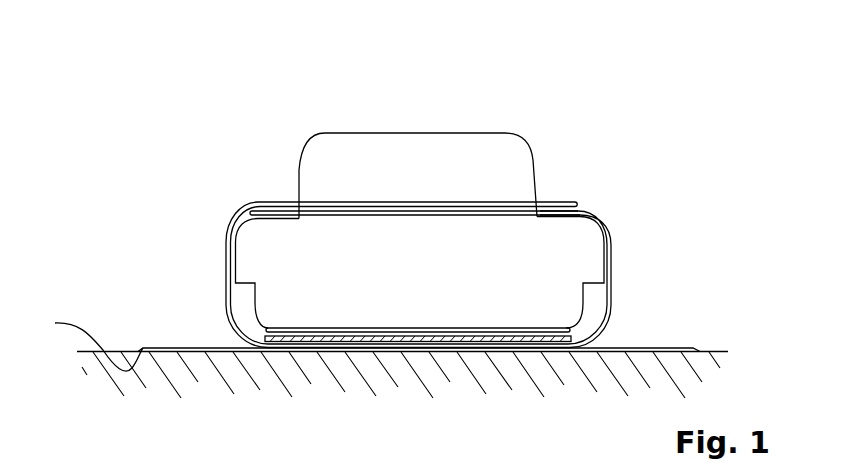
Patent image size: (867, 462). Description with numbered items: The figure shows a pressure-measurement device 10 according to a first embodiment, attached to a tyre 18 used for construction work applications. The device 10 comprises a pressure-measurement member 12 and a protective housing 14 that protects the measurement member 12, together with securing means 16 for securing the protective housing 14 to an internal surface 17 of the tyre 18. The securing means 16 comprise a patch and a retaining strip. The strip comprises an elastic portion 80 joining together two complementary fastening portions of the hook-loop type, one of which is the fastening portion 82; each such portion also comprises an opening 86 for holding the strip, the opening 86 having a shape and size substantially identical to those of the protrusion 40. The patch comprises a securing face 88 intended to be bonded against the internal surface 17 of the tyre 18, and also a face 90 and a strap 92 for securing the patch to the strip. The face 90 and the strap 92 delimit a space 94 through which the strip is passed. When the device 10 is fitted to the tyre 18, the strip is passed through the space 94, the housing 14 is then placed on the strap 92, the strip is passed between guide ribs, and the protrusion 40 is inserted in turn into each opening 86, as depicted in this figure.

The pressure-measurement device 10 is at (145, 106).
The pressure-measurement member 12 is at (382, 155).
The protective housing 14 is at (582, 252).
The securing means 16 is at (186, 280).
The internal surface 17 is at (715, 348).
The tyre 18 is at (622, 367).
The protrusion 40 is at (488, 145).
The elastic portion 80 is at (228, 232).
The fastening portion 82 is at (585, 208).
The opening 86 is at (567, 199).
The securing face 88 is at (85, 342).
The face 90 is at (372, 347).
The strap 92 is at (540, 327).
The space 94 is at (596, 338).